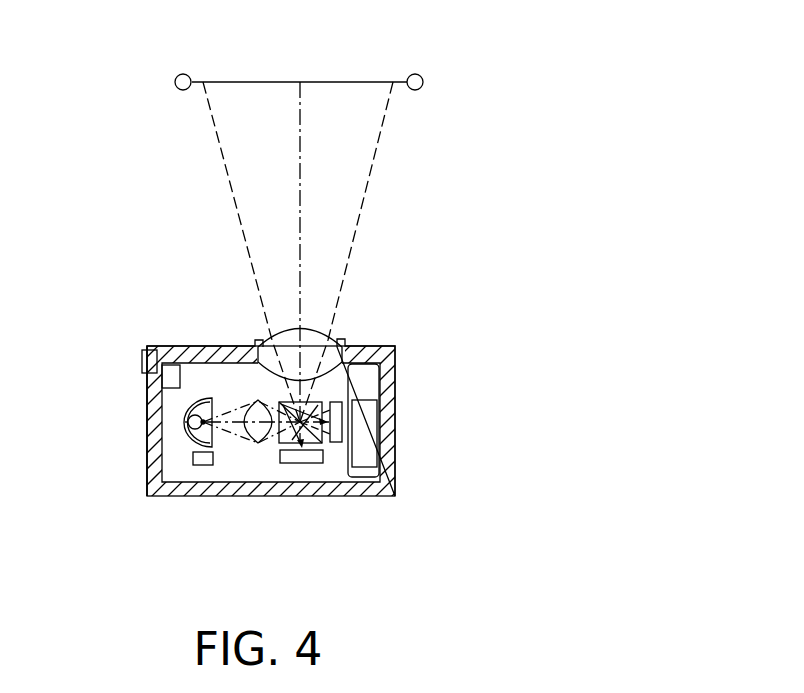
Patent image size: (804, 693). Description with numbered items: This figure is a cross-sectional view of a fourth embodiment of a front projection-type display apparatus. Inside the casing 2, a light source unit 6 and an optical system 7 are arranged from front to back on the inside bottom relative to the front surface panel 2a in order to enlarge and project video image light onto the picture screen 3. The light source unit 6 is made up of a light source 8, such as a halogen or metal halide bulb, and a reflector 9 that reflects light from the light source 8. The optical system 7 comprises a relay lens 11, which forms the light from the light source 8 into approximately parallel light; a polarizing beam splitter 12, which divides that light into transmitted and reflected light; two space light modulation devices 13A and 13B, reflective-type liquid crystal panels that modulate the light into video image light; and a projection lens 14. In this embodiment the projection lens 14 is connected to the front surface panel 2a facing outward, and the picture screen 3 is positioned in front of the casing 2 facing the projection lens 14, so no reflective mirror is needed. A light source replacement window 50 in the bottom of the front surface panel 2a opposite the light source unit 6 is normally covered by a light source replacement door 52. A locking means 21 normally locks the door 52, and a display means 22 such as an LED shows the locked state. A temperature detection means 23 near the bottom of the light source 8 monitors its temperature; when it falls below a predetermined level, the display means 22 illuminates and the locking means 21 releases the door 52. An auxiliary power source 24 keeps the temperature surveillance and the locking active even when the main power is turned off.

The casing 2 is at (276, 414).
The front surface panel 2a is at (370, 346).
The picture screen 3 is at (372, 82).
The light source unit 6 is at (146, 500).
The optical system 7 is at (334, 508).
The light source 8 is at (193, 440).
The reflector 9 is at (200, 447).
The relay lens 11 is at (258, 443).
The polarizing beam splitter 12 is at (284, 443).
The space light modulation device 13A is at (298, 463).
The space light modulation device 13B is at (372, 475).
The projection lens 14 is at (385, 478).
The locking means 21 is at (168, 385).
The display means 22 is at (142, 358).
The temperature detection means 23 is at (203, 458).
The auxiliary power source 24 is at (372, 440).
The light source replacement window 50 is at (150, 443).
The light source replacement door 52 is at (148, 405).